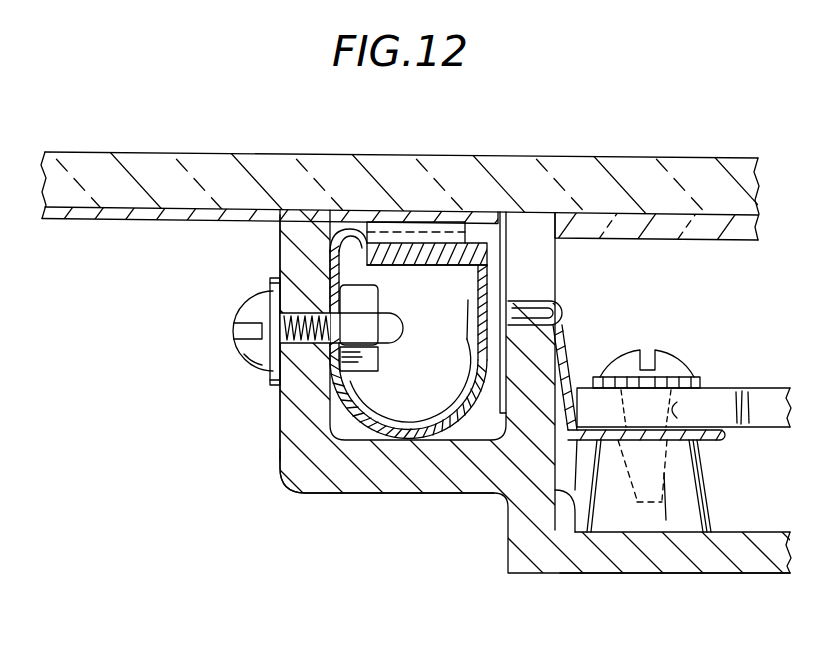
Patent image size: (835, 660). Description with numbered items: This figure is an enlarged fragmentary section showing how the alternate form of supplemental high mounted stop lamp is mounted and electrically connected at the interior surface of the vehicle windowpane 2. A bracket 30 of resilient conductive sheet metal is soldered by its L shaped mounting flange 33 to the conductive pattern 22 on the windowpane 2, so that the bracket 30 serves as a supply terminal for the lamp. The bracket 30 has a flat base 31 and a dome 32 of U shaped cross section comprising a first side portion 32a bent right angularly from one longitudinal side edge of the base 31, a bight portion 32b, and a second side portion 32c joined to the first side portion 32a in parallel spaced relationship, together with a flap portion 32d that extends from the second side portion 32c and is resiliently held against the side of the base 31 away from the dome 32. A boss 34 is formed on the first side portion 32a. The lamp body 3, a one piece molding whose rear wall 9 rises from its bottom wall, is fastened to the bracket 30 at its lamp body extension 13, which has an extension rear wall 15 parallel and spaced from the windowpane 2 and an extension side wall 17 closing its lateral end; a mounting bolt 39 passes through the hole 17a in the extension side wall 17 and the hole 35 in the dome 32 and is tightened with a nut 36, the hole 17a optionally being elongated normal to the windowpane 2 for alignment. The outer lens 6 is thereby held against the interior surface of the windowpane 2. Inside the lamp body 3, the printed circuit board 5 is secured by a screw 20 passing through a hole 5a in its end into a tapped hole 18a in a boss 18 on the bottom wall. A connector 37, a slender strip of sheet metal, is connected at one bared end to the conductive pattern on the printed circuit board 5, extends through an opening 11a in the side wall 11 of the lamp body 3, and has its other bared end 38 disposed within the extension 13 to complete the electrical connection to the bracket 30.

The vehicle windowpane 2 is at (150, 151).
The conductive pattern 22 is at (128, 220).
The outer lens 6 is at (668, 226).
The bracket 30 is at (417, 399).
The lamp body extension 13 is at (313, 495).
The extension rear wall 15 is at (418, 494).
The extension side wall 17 is at (281, 404).
The lamp body 3 is at (675, 585).
The rear wall 9 is at (683, 575).
The boss 34 is at (506, 303).
The dome 32 is at (350, 332).
The first side portion 32a is at (478, 442).
The bight portion 32b is at (378, 442).
The second side portion 32c is at (283, 418).
The flap portion 32d is at (410, 241).
The base 31 is at (408, 264).
The mounting flange 33 is at (383, 222).
The bared end 38 is at (471, 373).
The mounting bolt 39 is at (293, 319).
The hole 17a is at (268, 302).
The hole 35 is at (395, 326).
The nut 36 is at (378, 370).
The side wall 11 is at (616, 445).
The opening 11a is at (561, 304).
The printed circuit board 5 is at (684, 381).
The hole 5a is at (680, 409).
The screw 20 is at (655, 348).
The boss 18 is at (679, 486).
The tapped hole 18a is at (667, 497).
The connector 37 is at (632, 481).